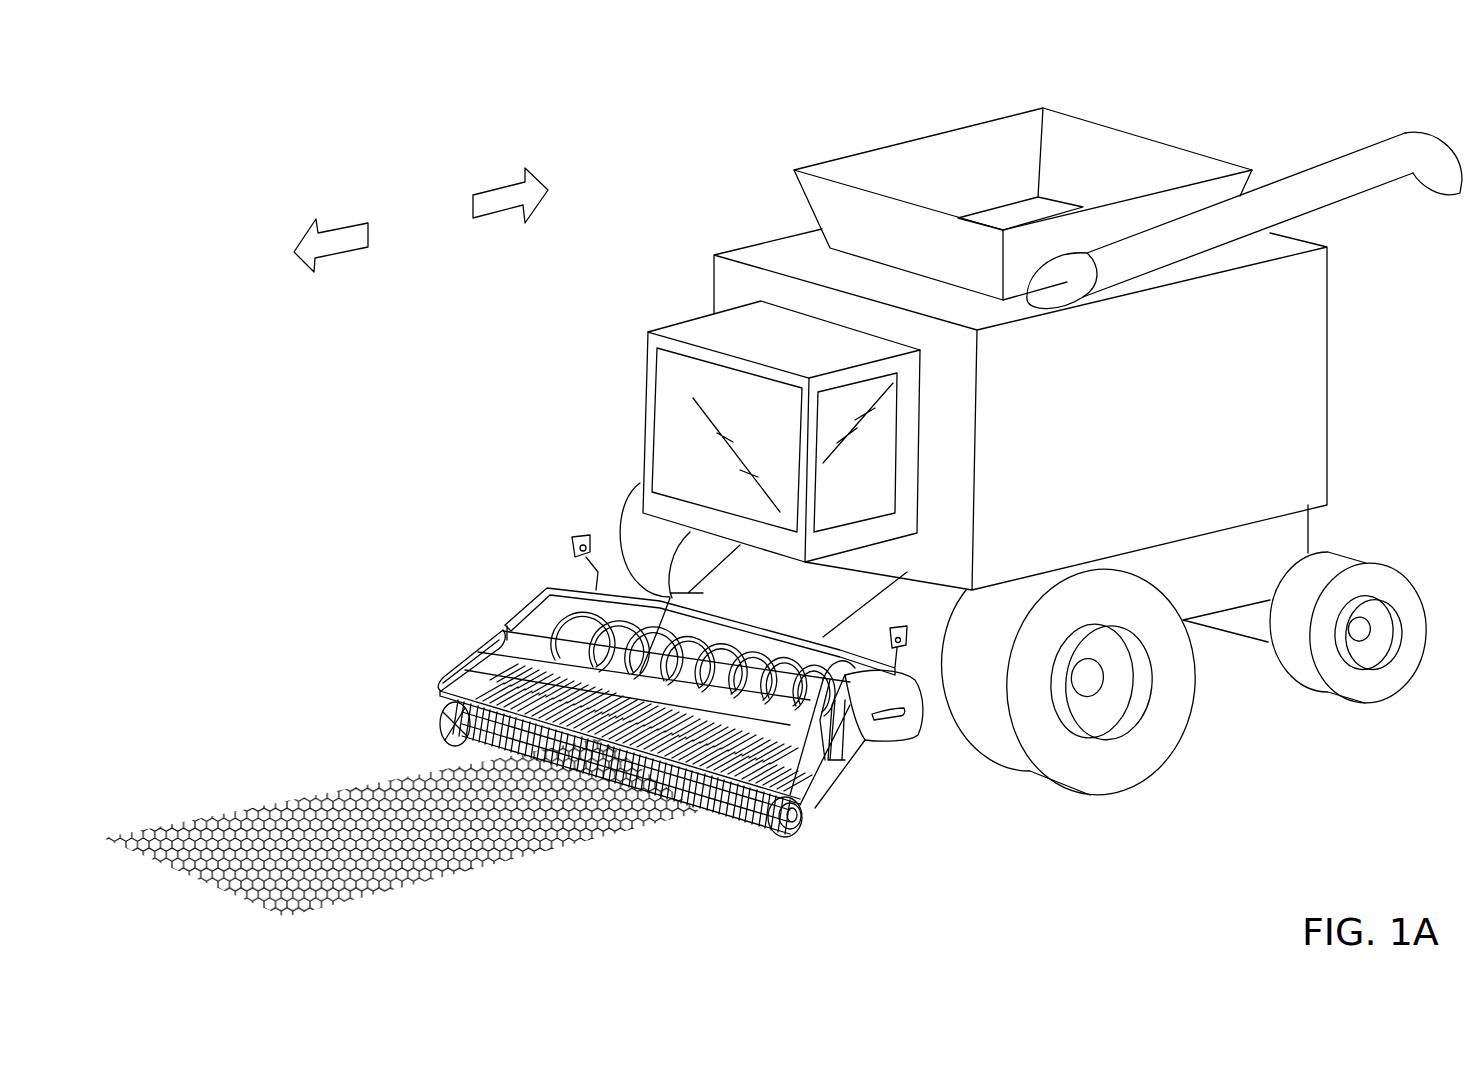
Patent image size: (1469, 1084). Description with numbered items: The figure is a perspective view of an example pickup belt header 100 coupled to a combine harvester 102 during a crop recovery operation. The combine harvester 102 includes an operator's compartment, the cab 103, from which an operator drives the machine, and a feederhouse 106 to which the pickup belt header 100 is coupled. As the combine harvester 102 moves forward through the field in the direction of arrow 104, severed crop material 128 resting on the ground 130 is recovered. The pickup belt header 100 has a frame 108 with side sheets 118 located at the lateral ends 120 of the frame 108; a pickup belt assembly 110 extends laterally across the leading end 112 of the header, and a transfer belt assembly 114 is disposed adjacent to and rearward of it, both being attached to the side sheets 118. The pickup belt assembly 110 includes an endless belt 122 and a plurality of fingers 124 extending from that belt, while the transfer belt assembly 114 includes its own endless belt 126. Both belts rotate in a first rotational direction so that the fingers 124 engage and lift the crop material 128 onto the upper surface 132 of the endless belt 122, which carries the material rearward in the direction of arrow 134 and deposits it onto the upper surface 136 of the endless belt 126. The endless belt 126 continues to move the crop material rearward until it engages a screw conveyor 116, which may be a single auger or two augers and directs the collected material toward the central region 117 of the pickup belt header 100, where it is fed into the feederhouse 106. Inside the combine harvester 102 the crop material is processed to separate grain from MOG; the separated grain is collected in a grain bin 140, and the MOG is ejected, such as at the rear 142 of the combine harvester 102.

The pickup belt header 100 is at (625, 742).
The combine harvester 102 is at (1285, 373).
The cab 103 is at (672, 383).
The arrow 104 is at (347, 240).
The feederhouse 106 is at (600, 585).
The frame 108 is at (865, 745).
The pickup belt assembly 110 is at (621, 824).
The leading end 112 is at (700, 820).
The transfer belt assembly 114 is at (902, 751).
The screw conveyor 116 is at (530, 603).
The central region 117 is at (700, 648).
The side sheets 118 is at (613, 771).
The lateral ends 120 is at (445, 708).
The endless belt 122 is at (621, 824).
The fingers 124 is at (720, 822).
The endless belt 126 is at (825, 797).
The crop material 128 is at (275, 836).
The ground 130 is at (1268, 856).
The upper surface 132 is at (440, 735).
The arrow 134 is at (497, 203).
The upper surface 136 is at (722, 822).
The grain bin 140 is at (940, 172).
The rear 142 is at (1295, 532).